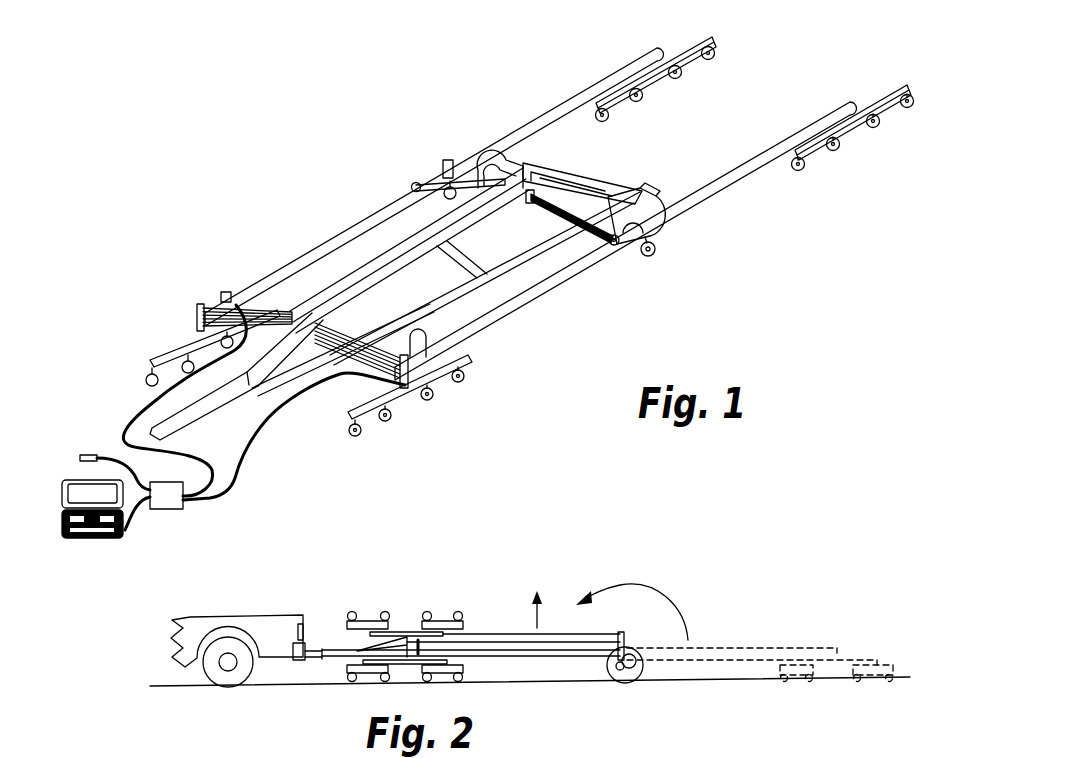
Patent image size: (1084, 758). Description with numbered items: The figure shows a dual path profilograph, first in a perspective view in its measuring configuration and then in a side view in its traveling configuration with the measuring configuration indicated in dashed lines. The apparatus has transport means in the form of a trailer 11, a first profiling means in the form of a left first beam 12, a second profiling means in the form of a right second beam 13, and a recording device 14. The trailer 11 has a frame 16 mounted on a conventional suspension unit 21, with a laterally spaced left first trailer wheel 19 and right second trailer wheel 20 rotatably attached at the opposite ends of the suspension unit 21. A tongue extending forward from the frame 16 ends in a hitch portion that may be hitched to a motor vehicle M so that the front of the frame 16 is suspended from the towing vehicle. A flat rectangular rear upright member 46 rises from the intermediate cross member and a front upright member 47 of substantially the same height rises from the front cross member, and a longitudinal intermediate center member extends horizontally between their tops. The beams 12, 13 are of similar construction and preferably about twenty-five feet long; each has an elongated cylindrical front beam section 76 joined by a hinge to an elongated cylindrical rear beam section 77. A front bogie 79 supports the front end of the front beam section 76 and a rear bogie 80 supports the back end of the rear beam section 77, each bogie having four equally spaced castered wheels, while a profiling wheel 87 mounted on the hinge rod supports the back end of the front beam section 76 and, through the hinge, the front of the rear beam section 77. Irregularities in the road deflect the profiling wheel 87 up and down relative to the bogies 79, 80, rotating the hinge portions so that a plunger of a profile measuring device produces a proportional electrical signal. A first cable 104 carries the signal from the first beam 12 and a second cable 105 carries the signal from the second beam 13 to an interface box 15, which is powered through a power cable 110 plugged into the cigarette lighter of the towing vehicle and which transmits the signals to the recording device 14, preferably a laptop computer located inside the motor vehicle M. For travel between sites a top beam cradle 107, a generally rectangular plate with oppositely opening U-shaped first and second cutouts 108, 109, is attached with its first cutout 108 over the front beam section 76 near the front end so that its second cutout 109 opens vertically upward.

In FIG. 1, the trailer 11 is at (596, 162).
In FIG. 1, the left first beam 12 is at (704, 227).
In FIG. 1, the right second beam 13 is at (428, 159).
In FIG. 1, the recording device 14 is at (95, 542).
In FIG. 1, the interface box 15 is at (168, 510).
In FIG. 1, the frame 16 is at (160, 401).
In FIG. 1, the left first trailer wheel 19 is at (641, 186).
In FIG. 2, the left first trailer wheel 19 is at (627, 684).
In FIG. 1, the right second trailer wheel 20 is at (535, 151).
In FIG. 1, the suspension unit 21 is at (542, 236).
In FIG. 1, the rear upright member 46 is at (537, 201).
In FIG. 1, the front upright member 47 is at (337, 327).
In FIG. 2, the front beam section 76 is at (515, 655).
In FIG. 2, the rear beam section 77 is at (500, 637).
In FIG. 1, the front bogie 79 is at (400, 398).
In FIG. 2, the front bogie 79 is at (408, 665).
In FIG. 1, the rear bogie 80 is at (853, 128).
In FIG. 2, the rear bogie 80 is at (407, 636).
In FIG. 1, the profiling wheel 87 is at (652, 257).
In FIG. 1, the first cable 104 is at (265, 423).
In FIG. 1, the second cable 105 is at (118, 419).
In FIG. 1, the top beam cradle 107 is at (440, 338).
In FIG. 1, the first cutout 108 is at (215, 308).
In FIG. 1, the second cutout 109 is at (232, 292).
In FIG. 1, the power cable 110 is at (86, 454).
In FIG. 2, the motor vehicle M is at (273, 612).